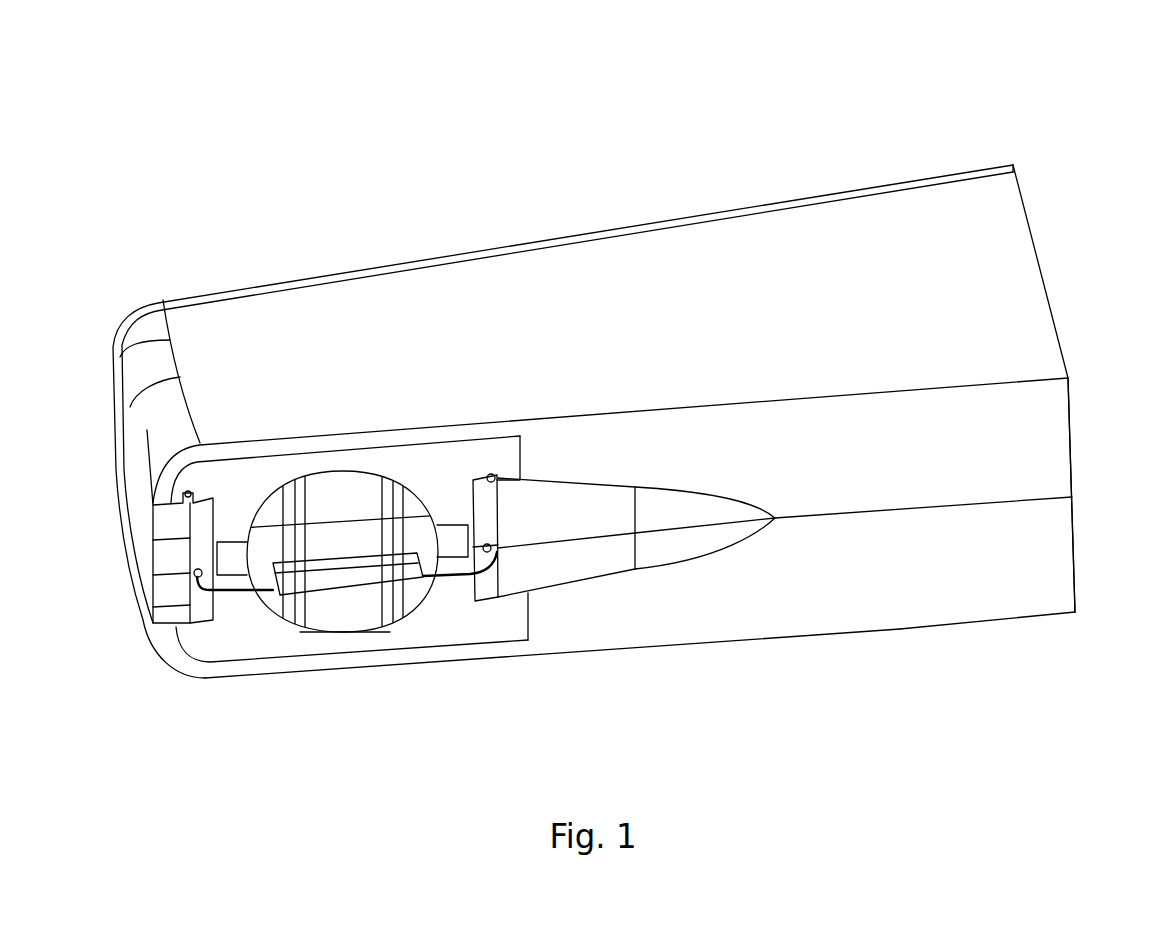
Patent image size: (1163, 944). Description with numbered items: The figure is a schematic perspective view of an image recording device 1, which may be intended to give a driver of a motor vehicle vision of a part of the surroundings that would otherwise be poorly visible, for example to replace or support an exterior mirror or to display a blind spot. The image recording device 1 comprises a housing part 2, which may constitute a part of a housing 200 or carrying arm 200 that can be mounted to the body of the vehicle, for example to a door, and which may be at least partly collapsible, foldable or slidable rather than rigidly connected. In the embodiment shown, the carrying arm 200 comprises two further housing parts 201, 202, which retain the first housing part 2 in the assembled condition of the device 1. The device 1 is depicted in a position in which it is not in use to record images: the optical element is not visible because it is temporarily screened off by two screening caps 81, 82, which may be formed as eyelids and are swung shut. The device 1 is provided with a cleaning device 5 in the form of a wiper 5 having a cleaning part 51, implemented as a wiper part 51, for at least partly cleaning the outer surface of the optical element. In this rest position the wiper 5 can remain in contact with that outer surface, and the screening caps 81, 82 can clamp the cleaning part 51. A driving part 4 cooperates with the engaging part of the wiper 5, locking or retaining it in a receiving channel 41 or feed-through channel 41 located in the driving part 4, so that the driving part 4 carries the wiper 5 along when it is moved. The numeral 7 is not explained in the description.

The image recording device 1 is at (603, 392).
The housing 7 is at (631, 374).
The housing part 2 is at (472, 630).
The driving part 4 is at (198, 525).
The receiving channel 41 is at (204, 558).
The cleaning device 5 is at (347, 650).
The cleaning part 51 is at (412, 562).
The screening cap 81 is at (343, 495).
The screening cap 82 is at (360, 618).
The housing 200 is at (900, 607).
The further housing part 201 is at (1047, 438).
The second housing part 202 is at (1012, 595).